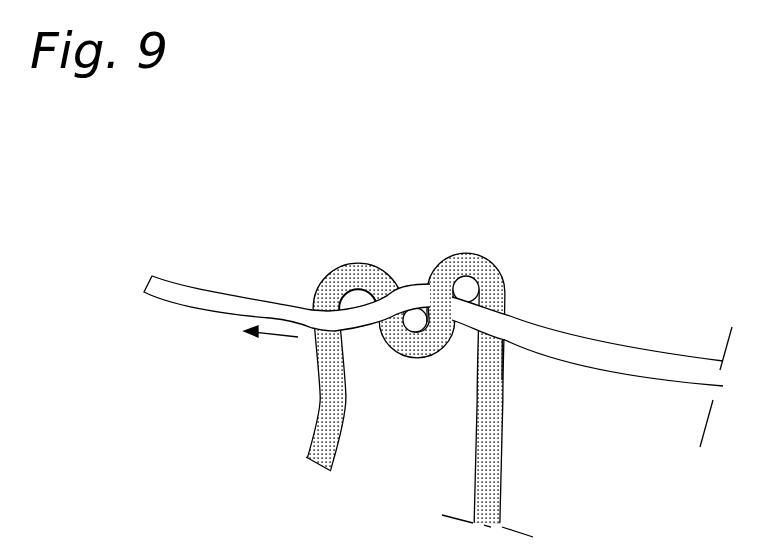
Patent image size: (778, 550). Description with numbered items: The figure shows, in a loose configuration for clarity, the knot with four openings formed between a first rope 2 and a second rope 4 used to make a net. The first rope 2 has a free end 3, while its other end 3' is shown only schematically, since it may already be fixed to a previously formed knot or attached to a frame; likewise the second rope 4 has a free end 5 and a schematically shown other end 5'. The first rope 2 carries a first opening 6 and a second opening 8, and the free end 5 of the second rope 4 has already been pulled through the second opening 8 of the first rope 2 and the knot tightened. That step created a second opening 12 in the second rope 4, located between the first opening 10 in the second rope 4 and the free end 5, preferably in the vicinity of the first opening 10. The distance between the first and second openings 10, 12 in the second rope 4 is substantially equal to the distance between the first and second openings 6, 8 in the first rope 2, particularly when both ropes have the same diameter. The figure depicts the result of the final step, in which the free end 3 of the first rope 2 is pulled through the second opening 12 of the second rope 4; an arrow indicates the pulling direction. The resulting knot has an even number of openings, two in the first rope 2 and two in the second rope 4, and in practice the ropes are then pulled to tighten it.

The first rope 2 is at (438, 347).
The free end of the first rope 3 is at (287, 289).
The other end of the first rope 3' is at (592, 372).
The second rope 4 is at (482, 265).
The free end of the second rope 5 is at (392, 370).
The other end of the second rope 5' is at (495, 519).
The first opening in the first rope 6 is at (498, 326).
The second opening in the first rope 8 is at (401, 298).
The first opening in the second rope 10 is at (445, 293).
The second opening in the second rope 12 is at (270, 308).